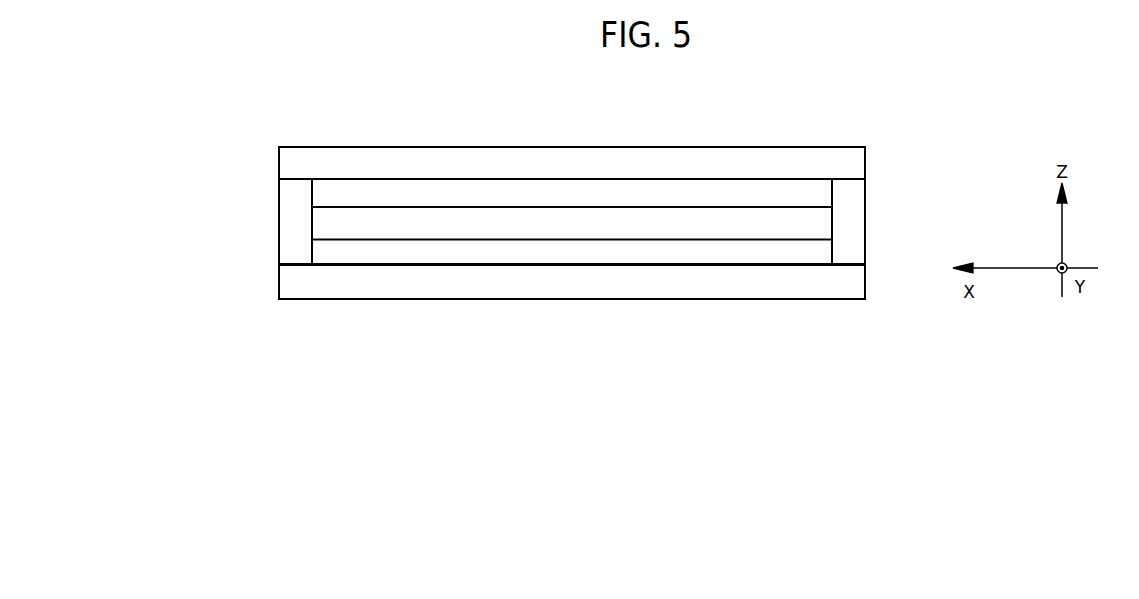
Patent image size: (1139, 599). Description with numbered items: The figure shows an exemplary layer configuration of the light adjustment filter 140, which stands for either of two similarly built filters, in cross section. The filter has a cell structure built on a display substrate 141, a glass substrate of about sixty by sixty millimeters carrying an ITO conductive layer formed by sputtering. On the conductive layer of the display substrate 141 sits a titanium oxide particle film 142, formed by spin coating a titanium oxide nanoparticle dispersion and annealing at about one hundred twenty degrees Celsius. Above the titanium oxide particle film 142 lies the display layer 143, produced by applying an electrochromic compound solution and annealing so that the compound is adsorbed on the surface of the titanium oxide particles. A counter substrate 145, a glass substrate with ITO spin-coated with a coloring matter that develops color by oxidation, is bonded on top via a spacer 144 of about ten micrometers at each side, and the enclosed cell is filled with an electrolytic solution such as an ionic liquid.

The light adjustment filter 140 is at (400, 367).
The display substrate 141 is at (663, 298).
The titanium oxide particle film 142 is at (681, 262).
The display layer 143 is at (681, 232).
The spacer 144 is at (300, 222).
The counter substrate 145 is at (683, 165).